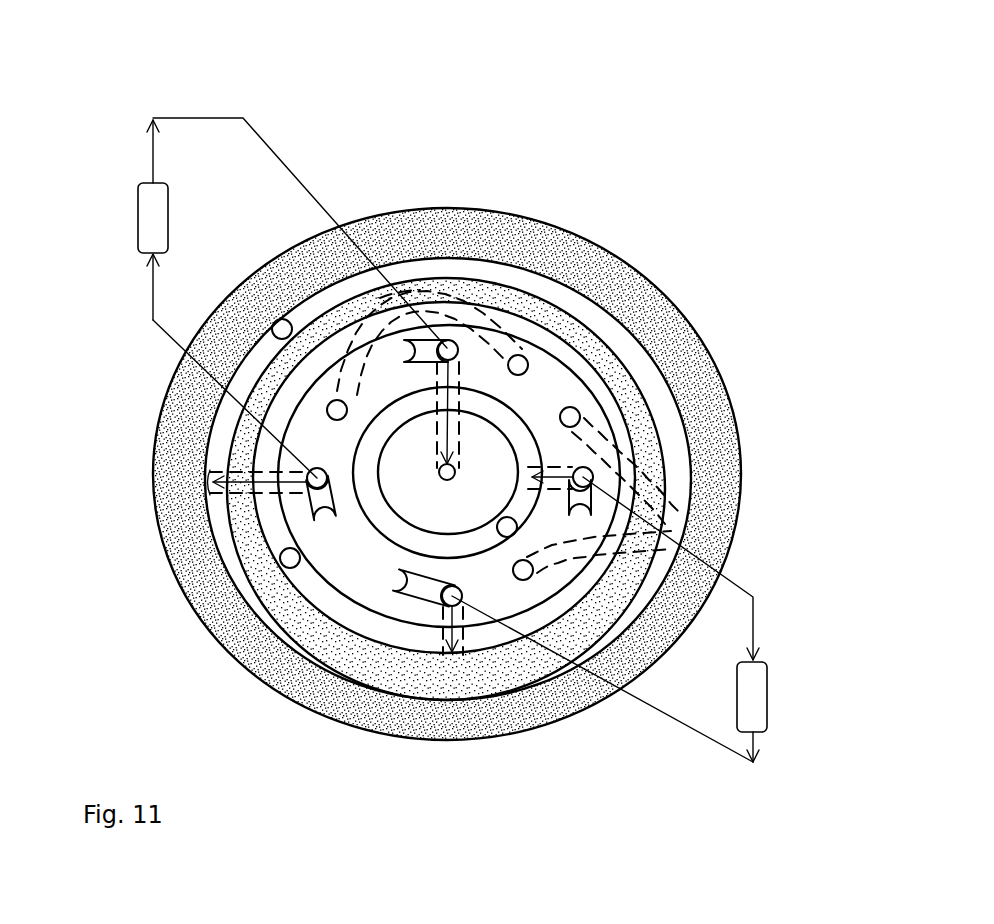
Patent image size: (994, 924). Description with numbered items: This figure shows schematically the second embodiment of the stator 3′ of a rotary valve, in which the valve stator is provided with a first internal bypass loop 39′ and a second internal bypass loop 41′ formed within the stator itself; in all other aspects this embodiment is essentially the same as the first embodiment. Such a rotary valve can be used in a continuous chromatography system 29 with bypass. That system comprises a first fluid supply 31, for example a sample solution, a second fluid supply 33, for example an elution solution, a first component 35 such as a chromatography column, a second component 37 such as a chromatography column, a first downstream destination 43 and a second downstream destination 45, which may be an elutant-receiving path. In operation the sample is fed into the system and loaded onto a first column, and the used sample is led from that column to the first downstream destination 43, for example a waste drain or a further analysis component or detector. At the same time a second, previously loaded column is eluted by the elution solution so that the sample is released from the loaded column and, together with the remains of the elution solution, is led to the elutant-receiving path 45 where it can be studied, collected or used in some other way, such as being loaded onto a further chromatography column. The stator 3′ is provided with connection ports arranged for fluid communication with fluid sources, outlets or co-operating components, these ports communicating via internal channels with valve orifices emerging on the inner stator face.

The stator 3′ is at (652, 288).
The continuous chromatography system 29 is at (292, 120).
The first fluid supply 31 is at (512, 535).
The second fluid supply 33 is at (275, 321).
The first component 35 is at (767, 684).
The second component 37 is at (138, 231).
The first internal bypass loop 39′ is at (407, 262).
The second internal bypass loop 41′ is at (676, 514).
The first downstream destination 43 is at (290, 558).
The second downstream destination 45 is at (447, 472).